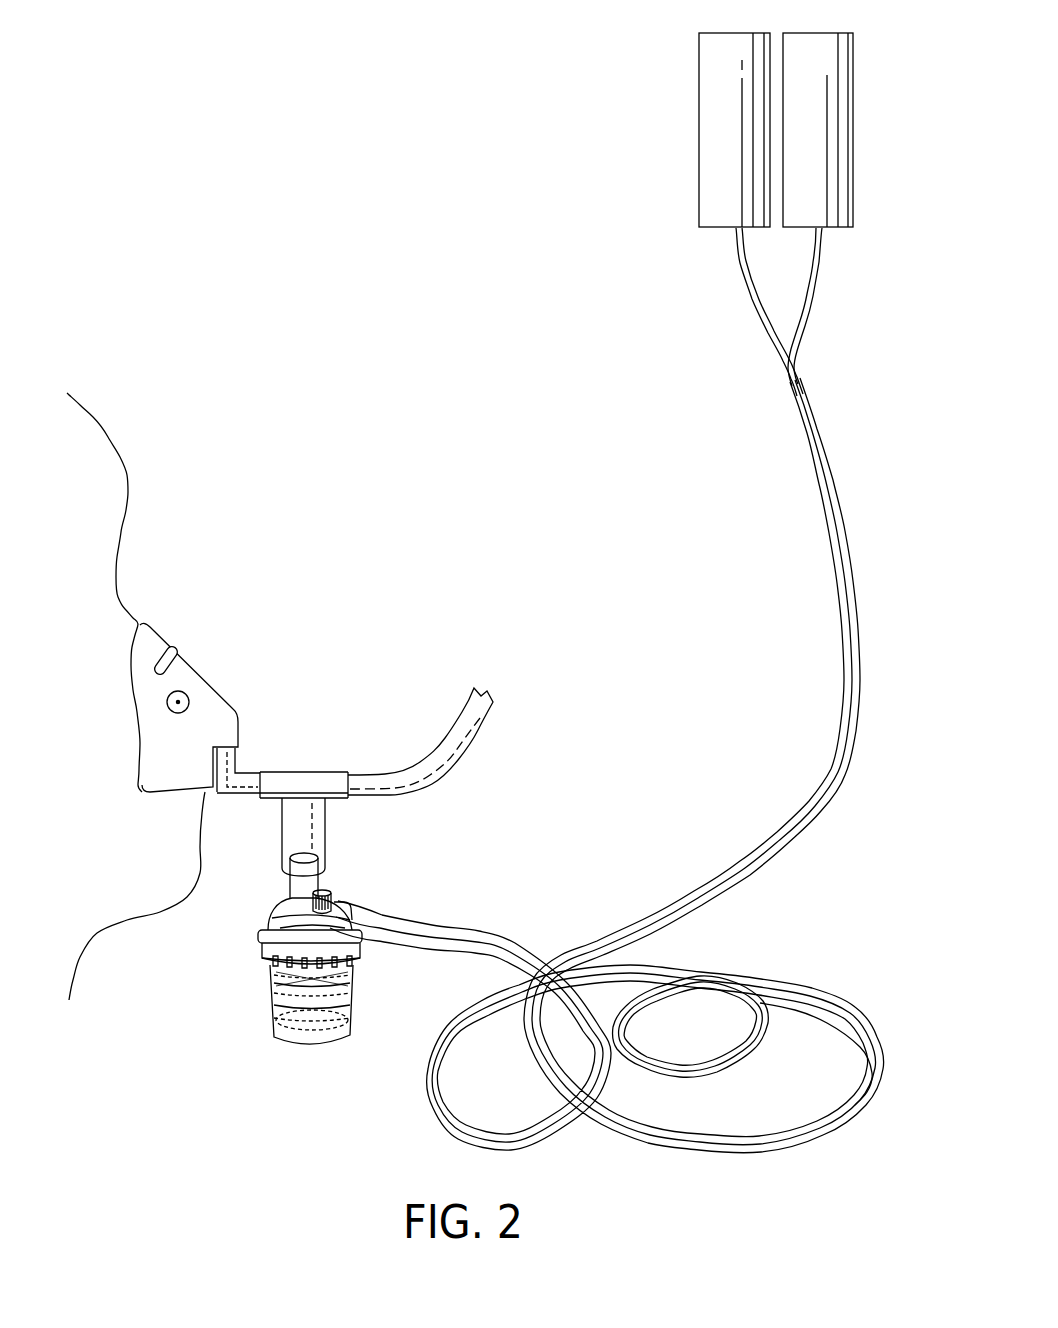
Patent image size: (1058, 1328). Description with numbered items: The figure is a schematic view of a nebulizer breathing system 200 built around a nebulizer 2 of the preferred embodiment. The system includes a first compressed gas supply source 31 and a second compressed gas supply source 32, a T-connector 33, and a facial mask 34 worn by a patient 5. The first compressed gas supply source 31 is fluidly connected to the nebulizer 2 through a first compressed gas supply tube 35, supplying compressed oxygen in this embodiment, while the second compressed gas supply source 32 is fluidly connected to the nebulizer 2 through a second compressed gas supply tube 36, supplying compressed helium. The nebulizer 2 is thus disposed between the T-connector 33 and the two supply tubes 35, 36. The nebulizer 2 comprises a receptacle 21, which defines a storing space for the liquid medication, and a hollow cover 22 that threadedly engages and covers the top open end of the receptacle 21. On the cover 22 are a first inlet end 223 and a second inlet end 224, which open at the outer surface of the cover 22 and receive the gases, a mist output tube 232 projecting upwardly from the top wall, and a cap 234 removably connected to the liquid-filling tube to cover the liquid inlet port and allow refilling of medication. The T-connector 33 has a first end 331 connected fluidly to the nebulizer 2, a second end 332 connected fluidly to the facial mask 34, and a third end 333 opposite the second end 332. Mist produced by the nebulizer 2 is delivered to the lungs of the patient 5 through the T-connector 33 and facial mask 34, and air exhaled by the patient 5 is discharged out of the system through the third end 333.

The nebulizer 2 is at (263, 949).
The patient 5 is at (113, 438).
The receptacle 21 is at (258, 1005).
The hollow cover 22 is at (262, 906).
The first compressed gas supply source 31 is at (708, 82).
The second compressed gas supply source 32 is at (832, 82).
The T-connector 33 is at (373, 737).
The facial mask 34 is at (197, 682).
The first compressed gas supply tube 35 is at (753, 297).
The second compressed gas supply tube 36 is at (814, 302).
The nebulizer breathing system 200 is at (474, 879).
The first inlet end 223 is at (352, 918).
The second inlet end 224 is at (262, 918).
The mist output tube 232 is at (323, 888).
The cap 234 is at (331, 895).
The first end 331 is at (325, 818).
The second end 332 is at (268, 770).
The third end 333 is at (345, 776).